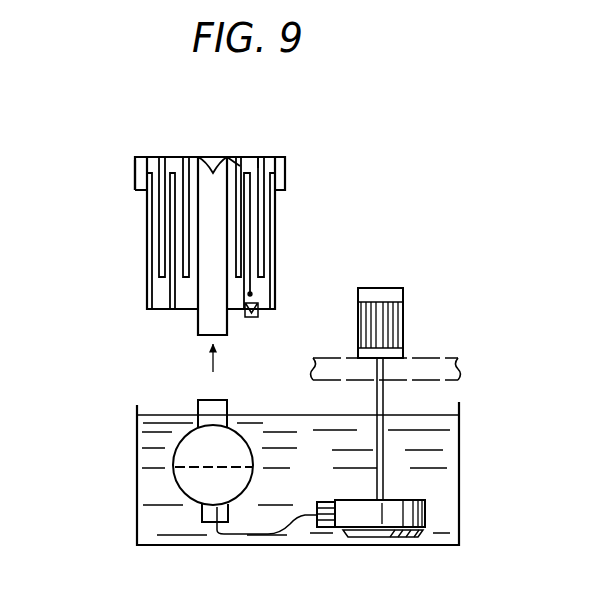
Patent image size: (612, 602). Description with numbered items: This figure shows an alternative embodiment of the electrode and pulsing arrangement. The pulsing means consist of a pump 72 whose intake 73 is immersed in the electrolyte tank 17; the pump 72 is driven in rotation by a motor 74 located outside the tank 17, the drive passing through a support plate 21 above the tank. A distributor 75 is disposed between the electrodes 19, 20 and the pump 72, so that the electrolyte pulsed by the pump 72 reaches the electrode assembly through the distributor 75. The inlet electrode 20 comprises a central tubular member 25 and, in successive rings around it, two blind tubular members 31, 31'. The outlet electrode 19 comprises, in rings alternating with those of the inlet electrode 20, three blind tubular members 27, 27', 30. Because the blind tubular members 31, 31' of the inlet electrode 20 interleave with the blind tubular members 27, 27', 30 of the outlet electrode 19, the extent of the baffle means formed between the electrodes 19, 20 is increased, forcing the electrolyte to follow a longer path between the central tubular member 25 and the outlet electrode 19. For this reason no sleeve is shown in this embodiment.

The outlet electrode 19 is at (131, 156).
The blind tubular member 30 is at (132, 182).
The blind tubular member 27 is at (238, 135).
The blind tubular member 27' is at (280, 136).
The inlet electrode 20 is at (141, 301).
The blind tubular member 31 is at (211, 269).
The blind tubular member 31' is at (151, 267).
The central tubular member 25 is at (230, 320).
The electrolyte tank 17 is at (130, 439).
The distributor 75 is at (249, 429).
The motor 74 is at (400, 307).
The platform 21 is at (444, 352).
The pump 72 is at (422, 497).
The intake 73 is at (383, 539).